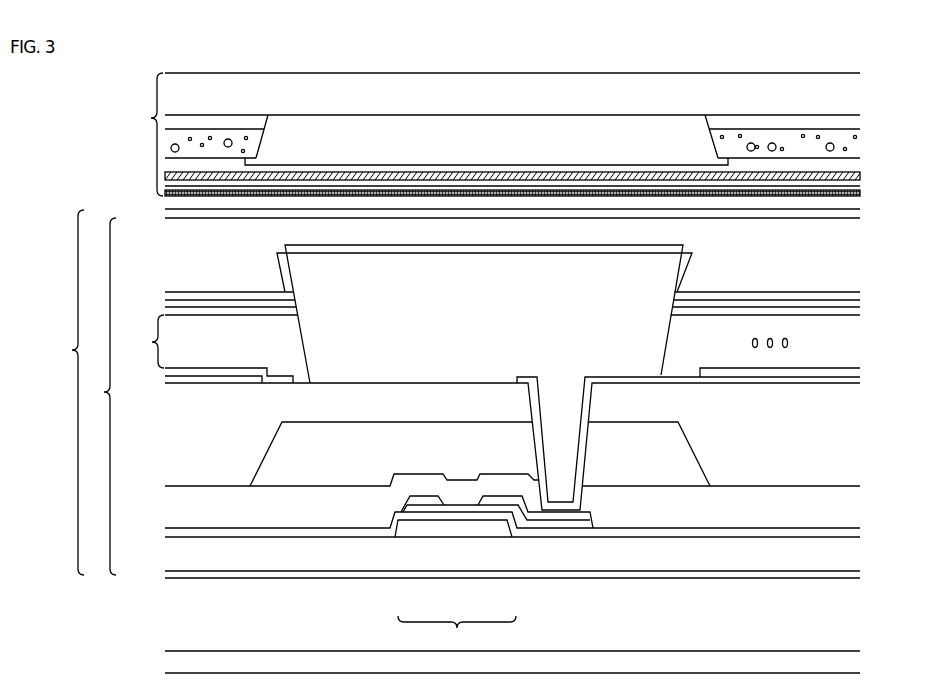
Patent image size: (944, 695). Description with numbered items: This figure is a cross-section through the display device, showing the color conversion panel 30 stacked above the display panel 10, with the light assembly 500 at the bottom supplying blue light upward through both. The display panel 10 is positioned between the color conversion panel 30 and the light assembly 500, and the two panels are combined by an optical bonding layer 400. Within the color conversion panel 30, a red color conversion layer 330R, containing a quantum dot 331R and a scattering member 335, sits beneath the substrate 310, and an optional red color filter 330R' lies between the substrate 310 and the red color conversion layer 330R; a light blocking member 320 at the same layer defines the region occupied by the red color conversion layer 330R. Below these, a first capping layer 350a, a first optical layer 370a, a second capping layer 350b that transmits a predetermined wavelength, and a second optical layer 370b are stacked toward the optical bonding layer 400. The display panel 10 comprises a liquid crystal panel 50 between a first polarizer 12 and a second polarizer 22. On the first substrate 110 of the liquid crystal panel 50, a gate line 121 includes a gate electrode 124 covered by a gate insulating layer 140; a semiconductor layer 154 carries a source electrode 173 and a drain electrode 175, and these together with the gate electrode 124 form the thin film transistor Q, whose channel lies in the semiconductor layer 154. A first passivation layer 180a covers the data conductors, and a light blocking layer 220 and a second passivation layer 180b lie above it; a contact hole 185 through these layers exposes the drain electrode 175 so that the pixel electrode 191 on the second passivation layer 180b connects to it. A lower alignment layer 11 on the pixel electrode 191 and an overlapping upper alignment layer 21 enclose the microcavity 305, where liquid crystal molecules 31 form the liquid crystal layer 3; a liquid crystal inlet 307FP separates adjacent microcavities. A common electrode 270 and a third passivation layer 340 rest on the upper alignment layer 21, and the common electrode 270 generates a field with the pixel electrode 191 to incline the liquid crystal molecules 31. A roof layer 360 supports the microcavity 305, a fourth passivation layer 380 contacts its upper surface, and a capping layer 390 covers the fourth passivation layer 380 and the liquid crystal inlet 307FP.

The liquid crystal layer 3 is at (152, 341).
The display panel 10 is at (66, 392).
The lower alignment layer 11 is at (853, 373).
The first polarizer 12 is at (690, 573).
The upper alignment layer 21 is at (853, 315).
The second polarizer 22 is at (548, 213).
The color conversion panel 30 is at (143, 134).
The liquid crystal molecules 31 is at (789, 343).
The liquid crystal panel 50 is at (99, 396).
The first substrate 110 is at (853, 553).
The gate line 121 is at (407, 531).
The gate electrode 124 is at (440, 530).
The gate insulating layer 140 is at (853, 530).
The semiconductor layer 154 is at (470, 508).
The source electrode 173 is at (422, 498).
The drain electrode 175 is at (493, 498).
The first passivation layer 180a is at (853, 497).
The second passivation layer 180b is at (173, 413).
The contact hole 185 is at (561, 393).
The pixel electrode 191 is at (853, 383).
The light blocking layer 220 is at (330, 457).
The common electrode 270 is at (853, 305).
The microcavity 305 is at (842, 339).
The liquid crystal inlet 307FP is at (443, 284).
The substrate 310 is at (640, 85).
The light blocking member 320 is at (594, 137).
The red color conversion layer 330R is at (512, 96).
The red color filter 330R' is at (454, 96).
The quantum dot 331R is at (790, 137).
The scattering member 335 is at (830, 147).
The third passivation layer 340 is at (853, 297).
The first capping layer 350a is at (285, 170).
The second capping layer 350b is at (386, 186).
The roof layer 360 is at (853, 268).
The first optical layer 370a is at (337, 176).
The second optical layer 370b is at (437, 193).
The fourth passivation layer 380 is at (853, 250).
The capping layer 390 is at (853, 228).
The optical bonding layer 400 is at (490, 203).
The light assembly 500 is at (853, 660).
The thin film transistor Q is at (457, 632).